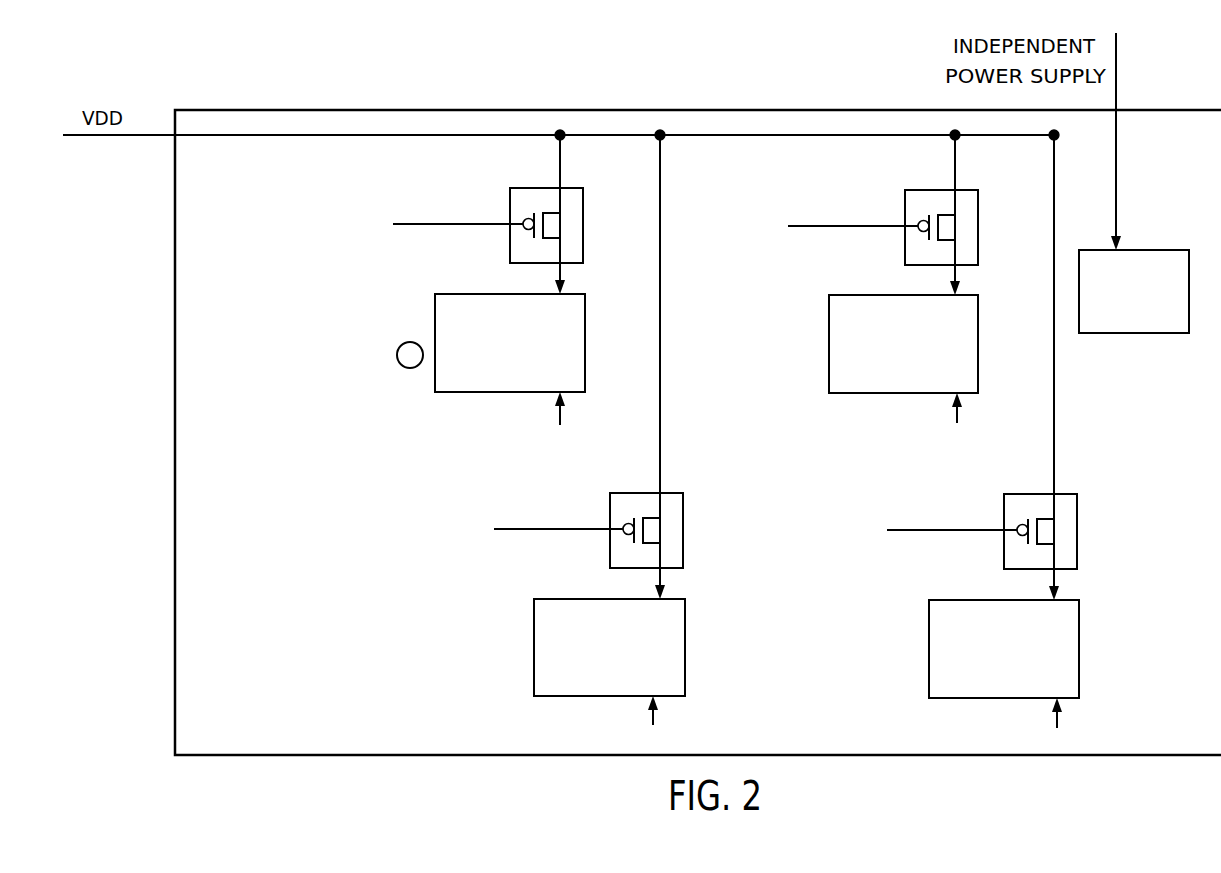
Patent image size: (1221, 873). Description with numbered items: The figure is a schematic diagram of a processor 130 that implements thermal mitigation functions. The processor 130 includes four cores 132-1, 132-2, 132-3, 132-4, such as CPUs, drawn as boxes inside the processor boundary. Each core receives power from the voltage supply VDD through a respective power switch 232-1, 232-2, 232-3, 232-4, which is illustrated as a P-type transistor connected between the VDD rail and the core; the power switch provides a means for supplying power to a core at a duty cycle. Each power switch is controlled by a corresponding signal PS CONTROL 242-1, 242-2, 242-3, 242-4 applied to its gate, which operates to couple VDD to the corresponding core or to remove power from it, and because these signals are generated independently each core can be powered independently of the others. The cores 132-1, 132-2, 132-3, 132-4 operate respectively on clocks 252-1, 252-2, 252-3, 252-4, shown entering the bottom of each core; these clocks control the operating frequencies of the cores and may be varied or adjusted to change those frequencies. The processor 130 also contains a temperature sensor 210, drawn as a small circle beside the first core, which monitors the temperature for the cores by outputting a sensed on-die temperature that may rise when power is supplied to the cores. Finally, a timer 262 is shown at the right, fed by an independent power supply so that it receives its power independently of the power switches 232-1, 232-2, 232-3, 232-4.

The processor 130 is at (321, 71).
The core 132-1 is at (510, 343).
The core 132-2 is at (903, 344).
The core 132-3 is at (609, 647).
The core 132-4 is at (1004, 649).
The temperature sensor 210 is at (400, 366).
The power switch 232-1 is at (583, 224).
The power switch 232-2 is at (978, 226).
The power switch 232-3 is at (683, 529).
The power switch 232-4 is at (1077, 530).
The PS CONTROL signal 242-1 is at (416, 209).
The PS CONTROL signal 242-2 is at (811, 210).
The PS CONTROL signal 242-3 is at (504, 512).
The PS CONTROL signal 242-4 is at (906, 517).
The clock 252-1 is at (519, 420).
The clock 252-2 is at (923, 422).
The clock 252-3 is at (585, 716).
The clock 252-4 is at (988, 718).
The timer 262 is at (1134, 291).